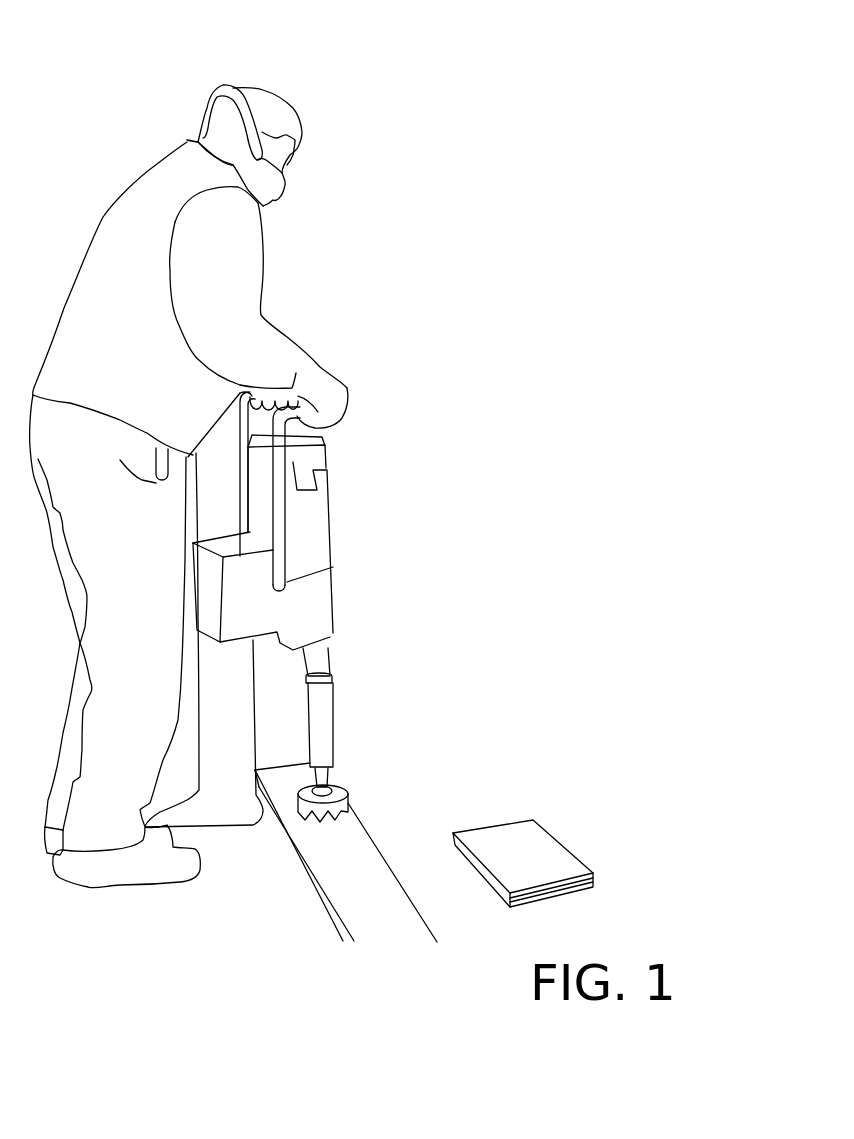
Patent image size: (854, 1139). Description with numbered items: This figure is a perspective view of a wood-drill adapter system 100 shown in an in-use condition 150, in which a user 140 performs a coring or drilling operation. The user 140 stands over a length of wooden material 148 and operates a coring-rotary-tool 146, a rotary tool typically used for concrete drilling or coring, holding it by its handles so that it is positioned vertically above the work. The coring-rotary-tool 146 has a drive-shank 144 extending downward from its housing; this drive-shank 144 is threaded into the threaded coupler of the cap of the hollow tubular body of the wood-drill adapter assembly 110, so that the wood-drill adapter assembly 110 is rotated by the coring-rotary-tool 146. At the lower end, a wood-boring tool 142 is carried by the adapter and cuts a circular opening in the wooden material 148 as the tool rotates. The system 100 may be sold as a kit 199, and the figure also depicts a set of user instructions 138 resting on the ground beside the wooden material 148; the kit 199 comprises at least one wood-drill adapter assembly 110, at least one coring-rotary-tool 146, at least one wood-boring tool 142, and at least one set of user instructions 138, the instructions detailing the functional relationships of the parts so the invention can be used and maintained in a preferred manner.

The wood-drill adapter system 100 is at (426, 92).
The wood-drill adapter assembly 110 is at (462, 120).
The in-use condition 150 is at (498, 154).
The kit 199 is at (480, 329).
The user 140 is at (152, 198).
The coring-rotary-tool 146 is at (317, 556).
The drive-shank 144 is at (323, 667).
The wood-boring tool 142 is at (339, 789).
The wooden material 148 is at (358, 867).
The user instructions 138 is at (505, 838).